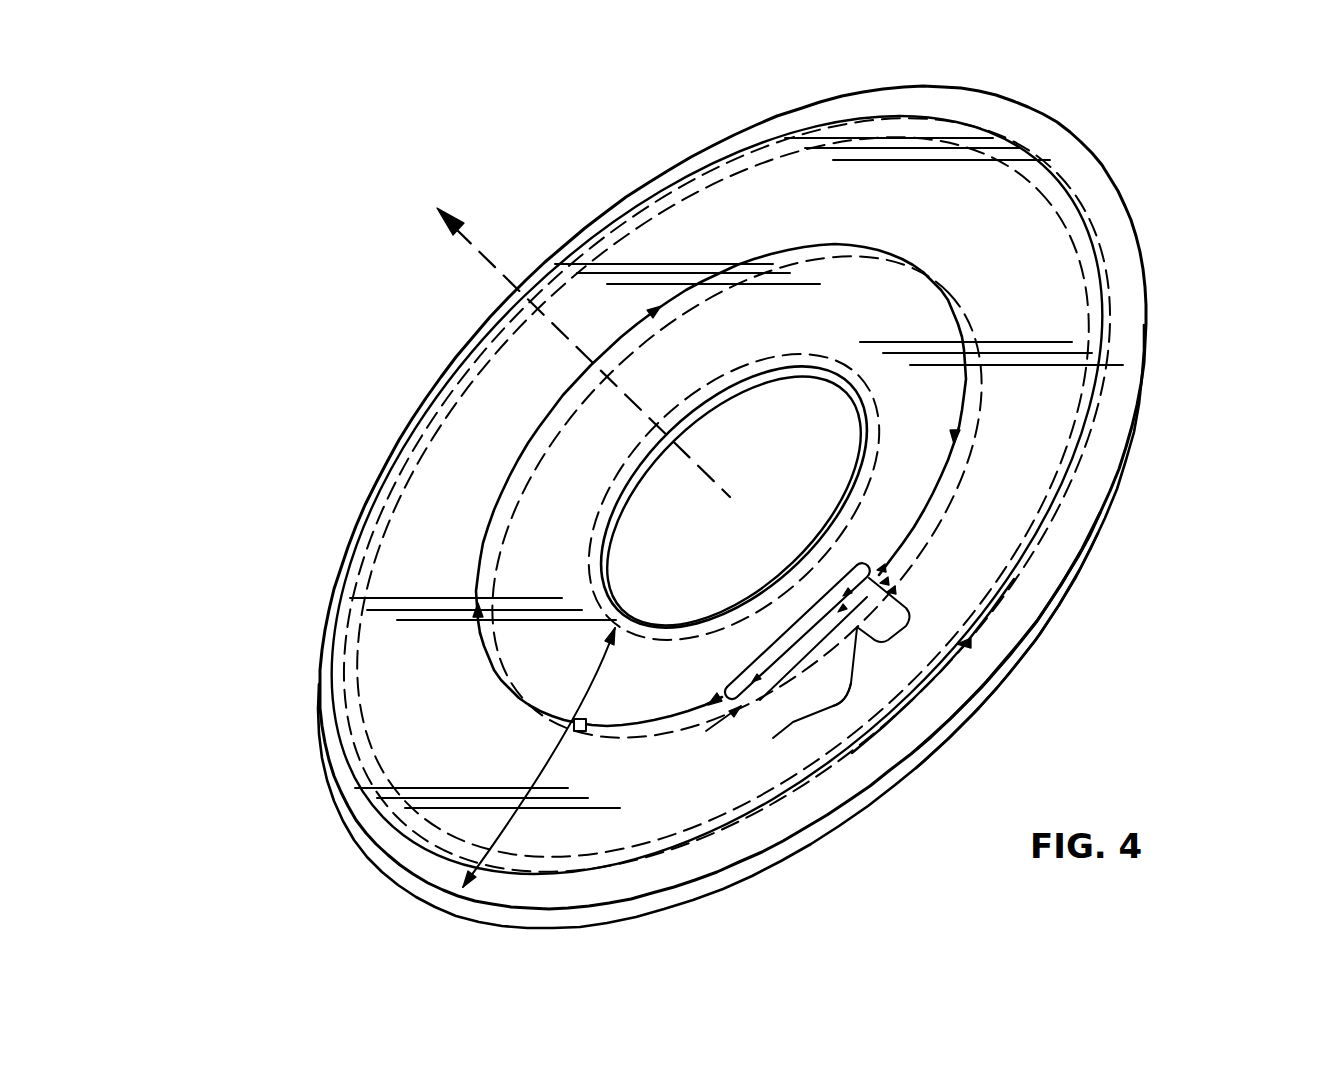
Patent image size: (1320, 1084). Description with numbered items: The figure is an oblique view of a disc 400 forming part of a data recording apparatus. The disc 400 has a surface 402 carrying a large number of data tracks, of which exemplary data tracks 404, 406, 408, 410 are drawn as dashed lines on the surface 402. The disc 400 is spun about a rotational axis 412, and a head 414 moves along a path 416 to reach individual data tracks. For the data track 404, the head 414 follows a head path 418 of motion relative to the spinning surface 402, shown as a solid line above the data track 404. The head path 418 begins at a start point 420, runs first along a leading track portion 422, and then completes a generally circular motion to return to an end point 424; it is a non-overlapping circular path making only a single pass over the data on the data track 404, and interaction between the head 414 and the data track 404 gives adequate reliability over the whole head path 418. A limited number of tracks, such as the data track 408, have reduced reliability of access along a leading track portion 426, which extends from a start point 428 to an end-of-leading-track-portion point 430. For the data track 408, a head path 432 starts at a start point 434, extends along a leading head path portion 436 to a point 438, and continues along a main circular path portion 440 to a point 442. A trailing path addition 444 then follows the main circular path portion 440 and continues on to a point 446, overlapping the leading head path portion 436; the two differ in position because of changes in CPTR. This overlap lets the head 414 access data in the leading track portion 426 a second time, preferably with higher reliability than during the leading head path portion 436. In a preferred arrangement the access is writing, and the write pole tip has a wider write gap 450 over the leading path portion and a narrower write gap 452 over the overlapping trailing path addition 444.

The disc 400 is at (1147, 388).
The surface 402 is at (1043, 343).
The data track 404 is at (353, 778).
The data track 406 is at (367, 783).
The data track 408 is at (492, 577).
The data track 410 is at (593, 520).
The rotational axis 412 is at (460, 232).
The head 414 is at (572, 728).
The path 416 is at (550, 787).
The head path 418 is at (377, 812).
The start point 420 is at (1012, 651).
The leading track portion 422 is at (870, 633).
The end point 424 is at (957, 644).
The leading track portion 426 is at (905, 712).
The start point 428 is at (887, 592).
The end-of-leading-track-portion point 430 is at (760, 740).
The head path 432 is at (533, 713).
The start point 434 is at (866, 573).
The leading head path portion 436 is at (790, 623).
The point 438 is at (728, 687).
The main circular path portion 440 is at (838, 241).
The point 442 is at (880, 583).
The trailing path addition 444 is at (850, 690).
The point 446 is at (706, 731).
The wider write gap 450 is at (877, 570).
The narrower write gap 452 is at (953, 636).